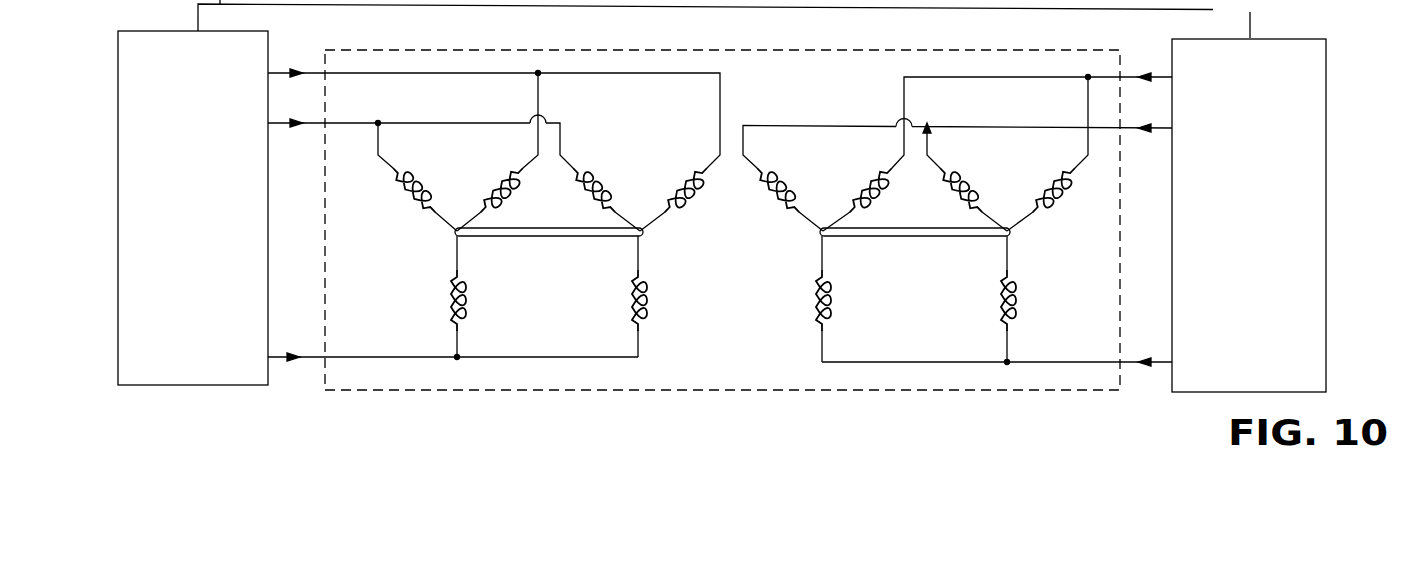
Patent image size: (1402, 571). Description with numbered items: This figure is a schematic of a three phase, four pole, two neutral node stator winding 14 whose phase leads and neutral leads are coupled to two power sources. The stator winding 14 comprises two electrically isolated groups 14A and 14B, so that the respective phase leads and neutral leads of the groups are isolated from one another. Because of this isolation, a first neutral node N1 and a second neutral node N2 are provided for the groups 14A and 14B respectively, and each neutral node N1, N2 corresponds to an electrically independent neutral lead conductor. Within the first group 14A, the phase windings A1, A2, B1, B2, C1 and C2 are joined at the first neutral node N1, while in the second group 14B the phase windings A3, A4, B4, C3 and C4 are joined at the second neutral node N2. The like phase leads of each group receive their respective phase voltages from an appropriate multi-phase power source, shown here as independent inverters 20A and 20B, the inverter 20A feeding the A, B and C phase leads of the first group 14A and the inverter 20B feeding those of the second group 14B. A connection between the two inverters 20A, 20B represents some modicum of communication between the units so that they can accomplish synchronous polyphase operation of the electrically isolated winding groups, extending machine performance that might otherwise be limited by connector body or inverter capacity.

The stator winding 14 is at (505, 389).
The first electrically isolated group of stator windings 14A is at (655, 322).
The second electrically isolated group of stator windings 14B is at (791, 330).
The inverter 20A is at (218, 363).
The inverter 20B is at (1195, 50).
The phase A winding A1 is at (405, 191).
The phase A winding A2 is at (581, 195).
The phase A winding A3 is at (765, 190).
The phase A winding A4 is at (955, 195).
The phase B winding B1 is at (447, 308).
The phase B winding B2 is at (627, 308).
The phase B winding B4 is at (827, 303).
The phase C winding C1 is at (498, 187).
The phase C winding C2 is at (680, 190).
The phase C winding C3 is at (863, 192).
The phase C winding C4 is at (1055, 192).
The first neutral node N1 is at (503, 234).
The second neutral node N2 is at (930, 234).